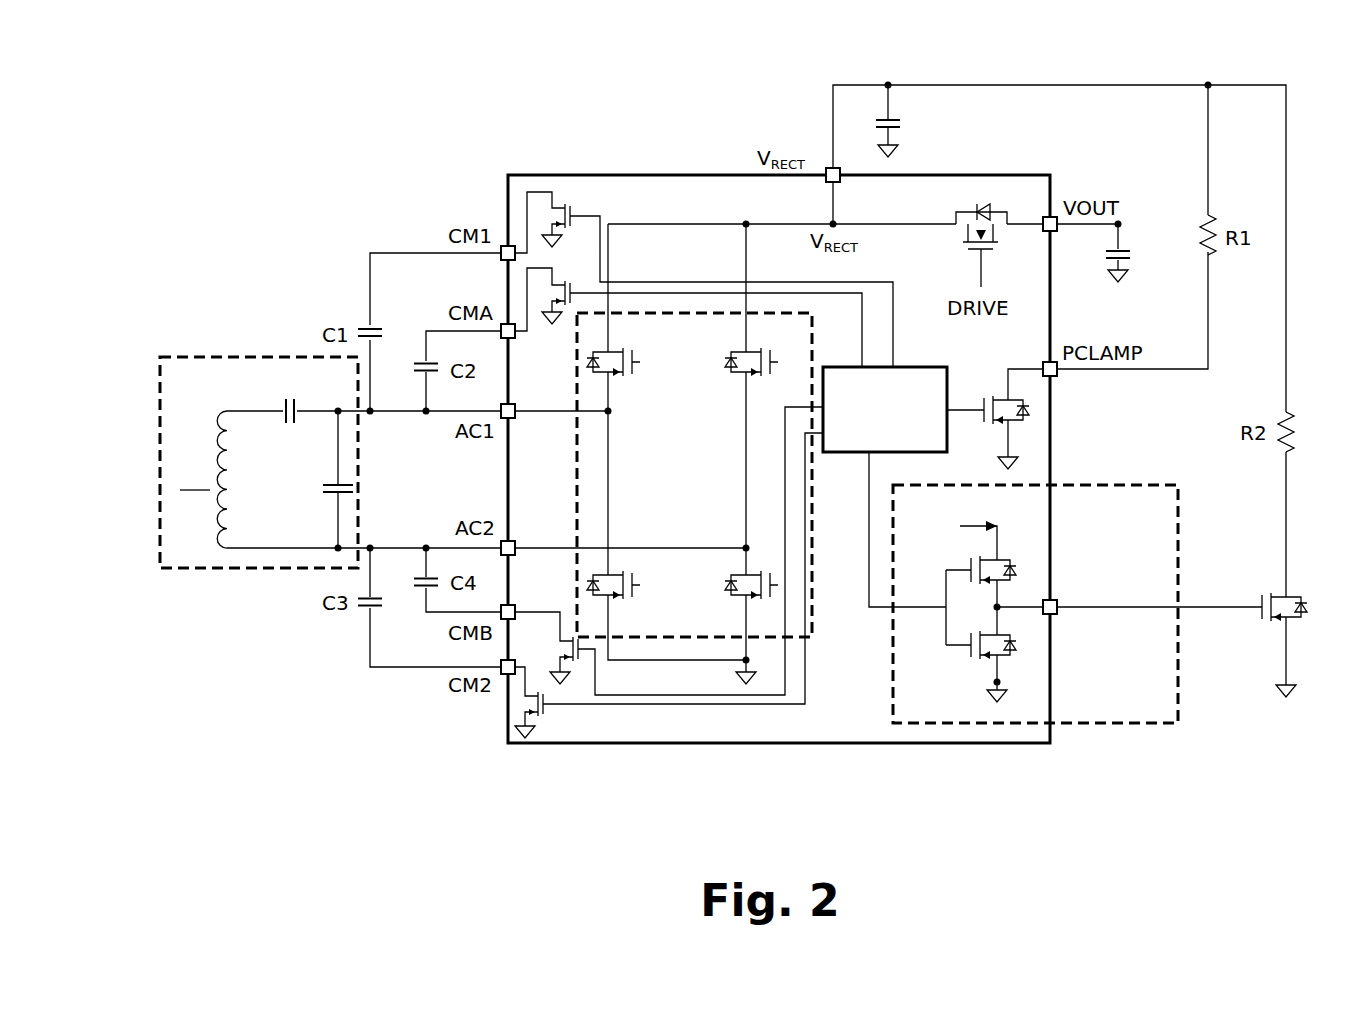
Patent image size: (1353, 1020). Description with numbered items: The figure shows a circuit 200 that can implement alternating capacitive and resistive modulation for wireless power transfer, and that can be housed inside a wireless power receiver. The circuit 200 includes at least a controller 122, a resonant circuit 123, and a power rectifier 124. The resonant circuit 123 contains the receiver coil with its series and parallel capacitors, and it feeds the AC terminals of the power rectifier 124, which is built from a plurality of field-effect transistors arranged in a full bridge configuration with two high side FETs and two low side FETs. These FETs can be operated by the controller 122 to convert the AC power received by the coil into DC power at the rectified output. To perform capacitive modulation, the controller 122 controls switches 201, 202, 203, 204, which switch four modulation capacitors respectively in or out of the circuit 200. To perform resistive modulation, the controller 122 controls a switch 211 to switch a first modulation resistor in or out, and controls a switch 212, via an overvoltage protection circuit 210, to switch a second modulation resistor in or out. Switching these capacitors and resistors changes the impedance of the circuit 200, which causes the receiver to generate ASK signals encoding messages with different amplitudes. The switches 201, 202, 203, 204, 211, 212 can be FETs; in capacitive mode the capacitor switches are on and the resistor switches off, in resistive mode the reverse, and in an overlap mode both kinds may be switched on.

The circuit 200 is at (705, 28).
The switch 201 is at (566, 188).
The switch 202 is at (565, 260).
The switch 203 is at (544, 728).
The switch 204 is at (578, 675).
The controller 122 is at (865, 425).
The resonant circuit 123 is at (256, 355).
The power rectifier 124 is at (812, 618).
The overvoltage protection circuit 210 is at (1118, 722).
The switch 211 is at (1042, 433).
The switch 212 is at (1266, 571).